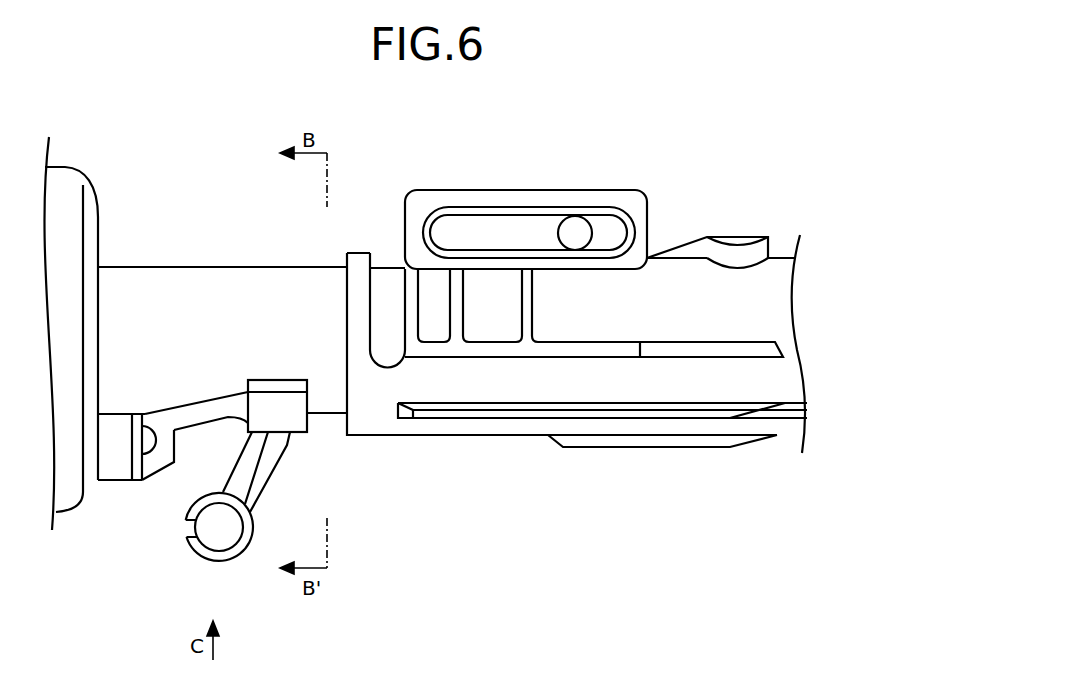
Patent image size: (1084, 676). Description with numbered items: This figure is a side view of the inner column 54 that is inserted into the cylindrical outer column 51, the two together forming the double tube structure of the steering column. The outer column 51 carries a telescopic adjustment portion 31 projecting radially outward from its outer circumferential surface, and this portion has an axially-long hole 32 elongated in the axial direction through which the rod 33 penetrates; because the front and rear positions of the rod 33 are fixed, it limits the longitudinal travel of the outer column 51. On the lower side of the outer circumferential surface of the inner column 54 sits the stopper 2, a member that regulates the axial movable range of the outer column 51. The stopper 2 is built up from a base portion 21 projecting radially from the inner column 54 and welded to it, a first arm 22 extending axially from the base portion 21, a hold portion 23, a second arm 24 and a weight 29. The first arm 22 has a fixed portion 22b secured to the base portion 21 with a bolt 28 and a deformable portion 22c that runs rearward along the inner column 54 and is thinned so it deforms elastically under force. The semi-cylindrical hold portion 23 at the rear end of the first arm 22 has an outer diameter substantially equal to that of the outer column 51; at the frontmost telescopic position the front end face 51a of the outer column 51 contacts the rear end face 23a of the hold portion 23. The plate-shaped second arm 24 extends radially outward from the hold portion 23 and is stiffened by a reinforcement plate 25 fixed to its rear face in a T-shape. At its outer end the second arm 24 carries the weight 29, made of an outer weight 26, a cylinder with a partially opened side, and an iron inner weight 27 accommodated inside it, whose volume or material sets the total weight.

The stopper 2 is at (134, 566).
The base portion 21 is at (112, 470).
The first arm 22 is at (183, 410).
The fixed portion 22b is at (140, 472).
The deformable portion 22c is at (202, 415).
The hold portion 23 is at (277, 400).
The end face 23a is at (310, 405).
The second arm 24 is at (248, 455).
The reinforcement plate 25 is at (257, 480).
The outer weight 26 is at (233, 552).
The inner weight 27 is at (213, 537).
The bolt 28 is at (148, 443).
The weight 29 is at (203, 573).
The telescopic adjustment portion 31 is at (600, 197).
The axially-long hole 32 is at (470, 222).
The rod 33 is at (560, 232).
The outer column 51 is at (682, 268).
The front end face 51a is at (340, 412).
The inner column 54 is at (225, 277).